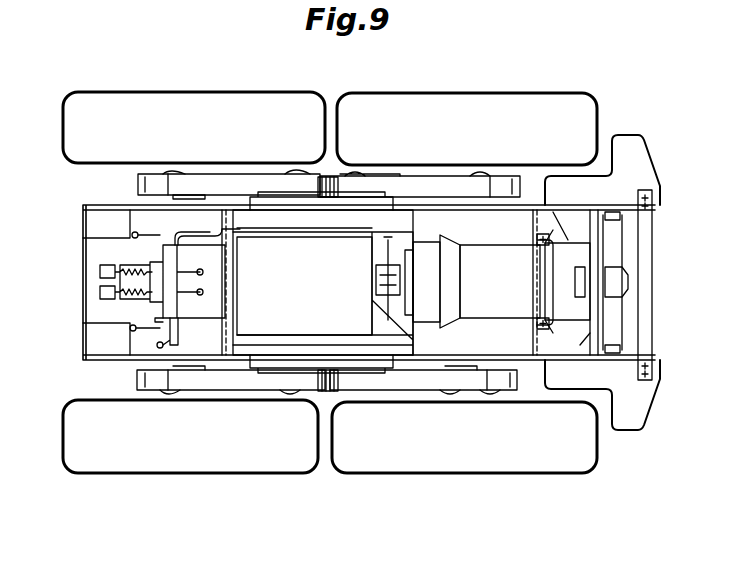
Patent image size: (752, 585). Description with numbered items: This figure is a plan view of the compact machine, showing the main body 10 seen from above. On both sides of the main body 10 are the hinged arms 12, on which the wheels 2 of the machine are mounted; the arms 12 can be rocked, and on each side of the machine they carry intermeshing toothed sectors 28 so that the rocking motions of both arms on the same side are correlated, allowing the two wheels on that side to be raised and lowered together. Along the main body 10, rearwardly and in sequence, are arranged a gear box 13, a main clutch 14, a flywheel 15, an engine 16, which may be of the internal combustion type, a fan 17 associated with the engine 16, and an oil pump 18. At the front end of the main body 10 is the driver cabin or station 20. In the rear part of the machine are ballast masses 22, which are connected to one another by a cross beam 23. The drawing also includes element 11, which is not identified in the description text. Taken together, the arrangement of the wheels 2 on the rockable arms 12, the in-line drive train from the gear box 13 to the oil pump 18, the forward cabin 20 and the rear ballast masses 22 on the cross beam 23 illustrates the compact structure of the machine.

The wheels 2 is at (252, 112).
The main body 10 is at (323, 282).
The engine cradle mounting 11 is at (262, 358).
The hinged arms 12 is at (205, 186).
The gear box 13 is at (382, 300).
The main clutch 14 is at (430, 313).
The flywheel 15 is at (450, 313).
The engine 16 is at (507, 303).
The fan 17 is at (570, 306).
The oil pump 18 is at (626, 282).
The driver cabin 20 is at (144, 309).
The ballast masses 22 is at (618, 146).
The cross beam 23 is at (645, 318).
The intermeshing toothed sectors 28 is at (337, 183).